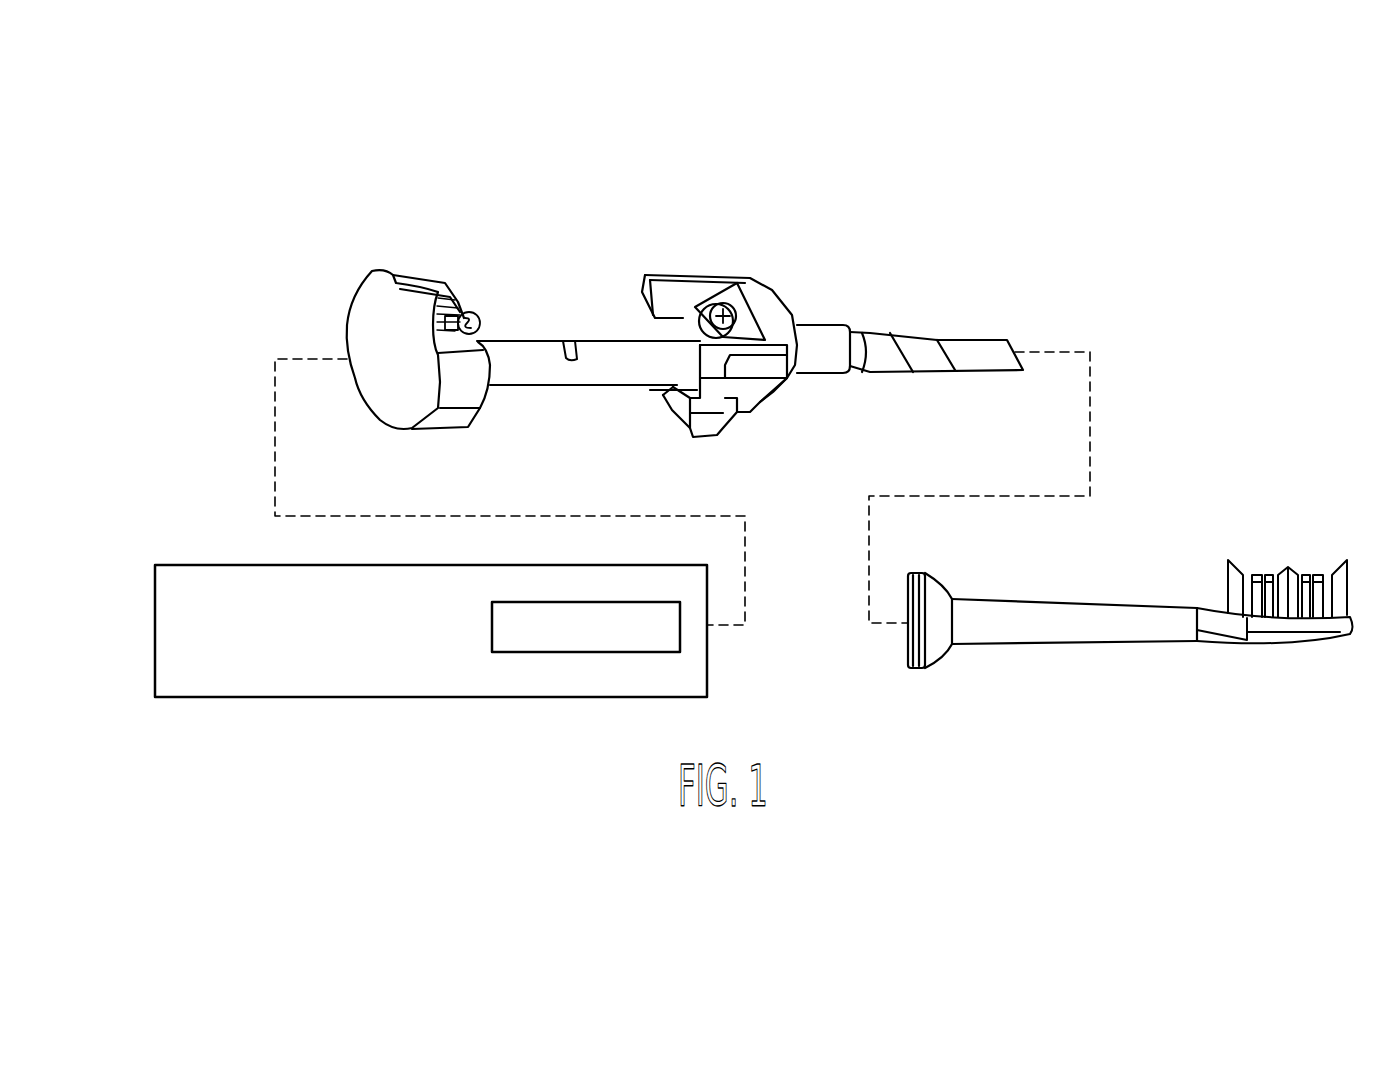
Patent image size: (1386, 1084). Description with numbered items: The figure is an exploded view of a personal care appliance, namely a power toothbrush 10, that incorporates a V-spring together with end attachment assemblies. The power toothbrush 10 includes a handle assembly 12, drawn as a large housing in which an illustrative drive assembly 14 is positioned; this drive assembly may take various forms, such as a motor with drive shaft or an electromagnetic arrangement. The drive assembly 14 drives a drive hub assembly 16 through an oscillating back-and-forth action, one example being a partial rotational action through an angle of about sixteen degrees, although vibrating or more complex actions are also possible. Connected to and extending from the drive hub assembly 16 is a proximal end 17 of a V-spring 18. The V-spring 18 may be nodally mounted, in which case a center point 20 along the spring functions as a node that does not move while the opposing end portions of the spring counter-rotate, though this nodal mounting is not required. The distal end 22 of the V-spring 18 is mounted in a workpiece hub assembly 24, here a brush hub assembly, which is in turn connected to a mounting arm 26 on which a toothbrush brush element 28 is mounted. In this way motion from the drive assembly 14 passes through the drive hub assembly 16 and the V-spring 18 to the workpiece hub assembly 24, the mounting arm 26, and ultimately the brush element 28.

The power toothbrush 10 is at (729, 240).
The handle assembly 12 is at (218, 580).
The drive assembly 14 is at (672, 643).
The drive hub assembly 16 is at (350, 310).
The proximal end 17 is at (478, 345).
The V-spring 18 is at (590, 341).
The center point 20 is at (575, 362).
The distal end 22 is at (683, 362).
The workpiece hub assembly 24 is at (770, 300).
The mounting arm 26 is at (1035, 644).
The toothbrush brush element 28 is at (1312, 575).